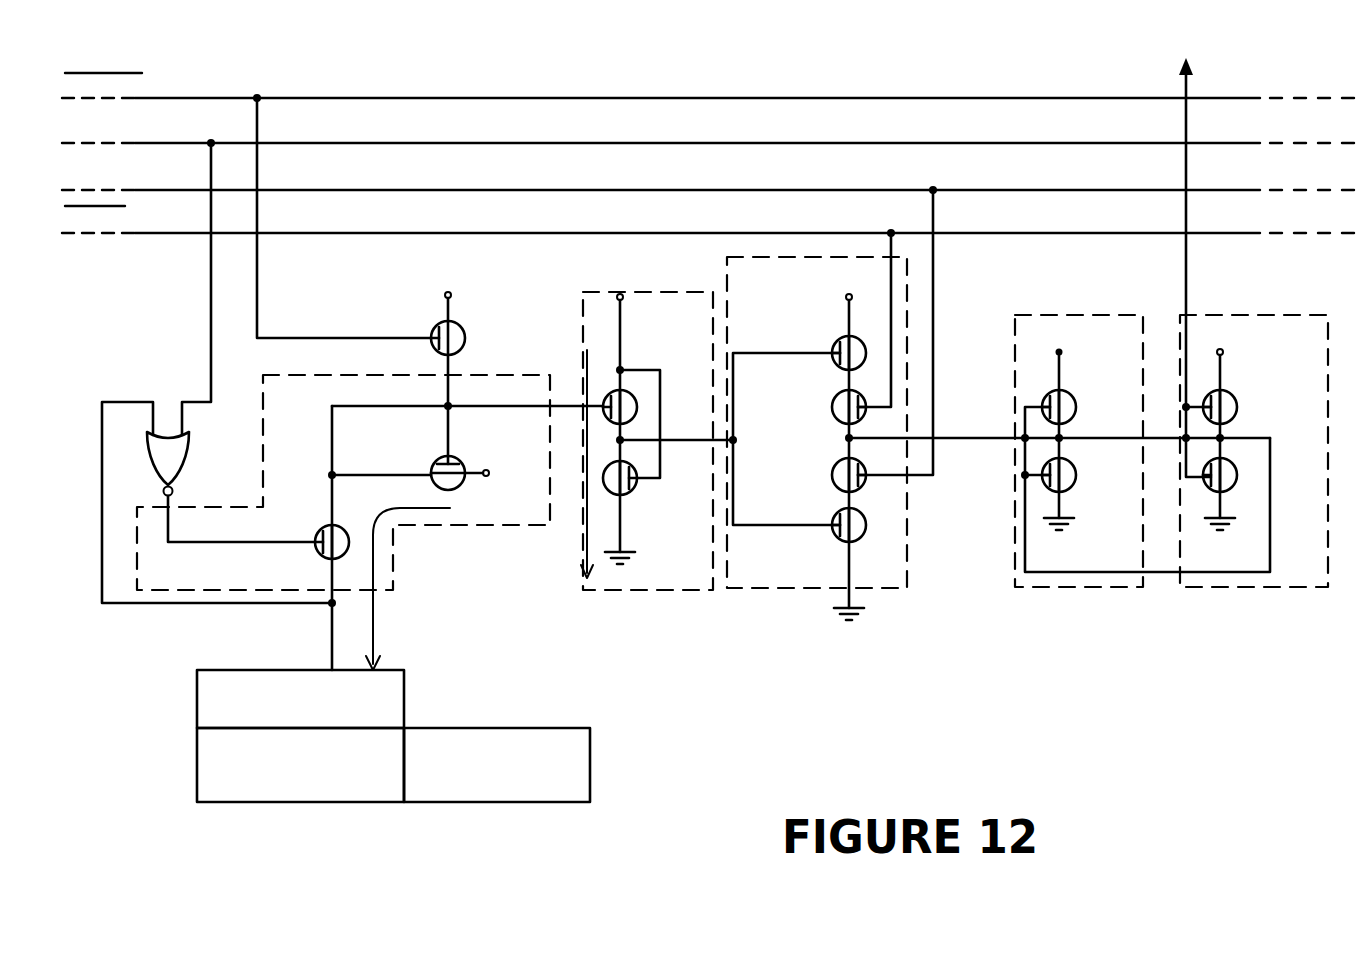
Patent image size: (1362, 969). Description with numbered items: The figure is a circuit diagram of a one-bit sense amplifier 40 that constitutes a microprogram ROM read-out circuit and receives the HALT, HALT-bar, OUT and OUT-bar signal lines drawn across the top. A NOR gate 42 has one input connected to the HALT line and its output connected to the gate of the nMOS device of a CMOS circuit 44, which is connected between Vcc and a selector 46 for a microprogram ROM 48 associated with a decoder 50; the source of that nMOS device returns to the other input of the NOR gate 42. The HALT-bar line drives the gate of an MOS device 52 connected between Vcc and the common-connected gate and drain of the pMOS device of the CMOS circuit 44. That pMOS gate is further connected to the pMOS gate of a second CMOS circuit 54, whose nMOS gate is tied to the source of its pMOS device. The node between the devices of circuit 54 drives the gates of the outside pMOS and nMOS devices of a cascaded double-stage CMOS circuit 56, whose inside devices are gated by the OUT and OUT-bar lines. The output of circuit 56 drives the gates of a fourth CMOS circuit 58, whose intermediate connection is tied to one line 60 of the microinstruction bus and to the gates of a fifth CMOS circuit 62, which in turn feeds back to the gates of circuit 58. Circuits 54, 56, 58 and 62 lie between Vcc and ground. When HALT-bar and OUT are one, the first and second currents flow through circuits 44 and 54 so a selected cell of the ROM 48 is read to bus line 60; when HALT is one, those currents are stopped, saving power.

The sense amplifier 40 is at (934, 696).
The NOR gate 42 is at (160, 464).
The CMOS circuit 44 is at (395, 558).
The selector 46 is at (197, 698).
The microprogram ROM 48 is at (267, 803).
The decoder 50 is at (543, 803).
The MOS device 52 is at (462, 331).
The second CMOS circuit 54 is at (706, 596).
The cascaded double-stage CMOS circuit 56 is at (894, 593).
The fourth CMOS circuit 58 is at (1136, 591).
The line of microinstruction bus 60 is at (1187, 78).
The fifth CMOS circuit 62 is at (1324, 528).